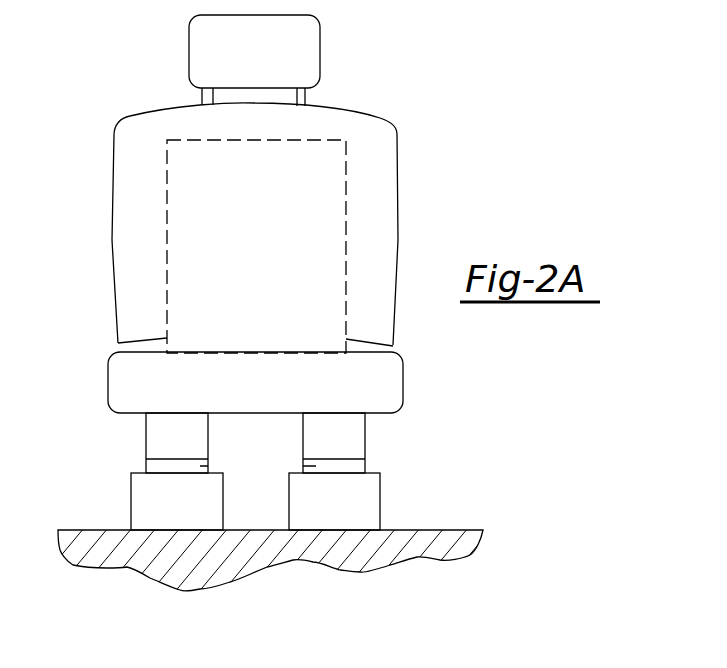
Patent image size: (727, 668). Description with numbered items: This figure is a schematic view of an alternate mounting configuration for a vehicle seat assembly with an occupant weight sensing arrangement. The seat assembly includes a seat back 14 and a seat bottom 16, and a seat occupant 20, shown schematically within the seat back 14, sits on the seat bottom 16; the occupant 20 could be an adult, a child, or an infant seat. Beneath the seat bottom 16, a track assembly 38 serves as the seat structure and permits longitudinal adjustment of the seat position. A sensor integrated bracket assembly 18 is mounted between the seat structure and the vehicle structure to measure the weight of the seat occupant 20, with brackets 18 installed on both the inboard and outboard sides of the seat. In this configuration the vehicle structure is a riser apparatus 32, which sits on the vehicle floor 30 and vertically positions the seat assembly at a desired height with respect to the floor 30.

The seat back 14 is at (360, 132).
The seat bottom 16 is at (128, 372).
The sensor integrated bracket assembly 18 is at (316, 466).
The seat occupant 20 is at (221, 145).
The vehicle floor 30 is at (452, 530).
The riser apparatus 32 is at (150, 498).
The track assembly 38 is at (170, 431).